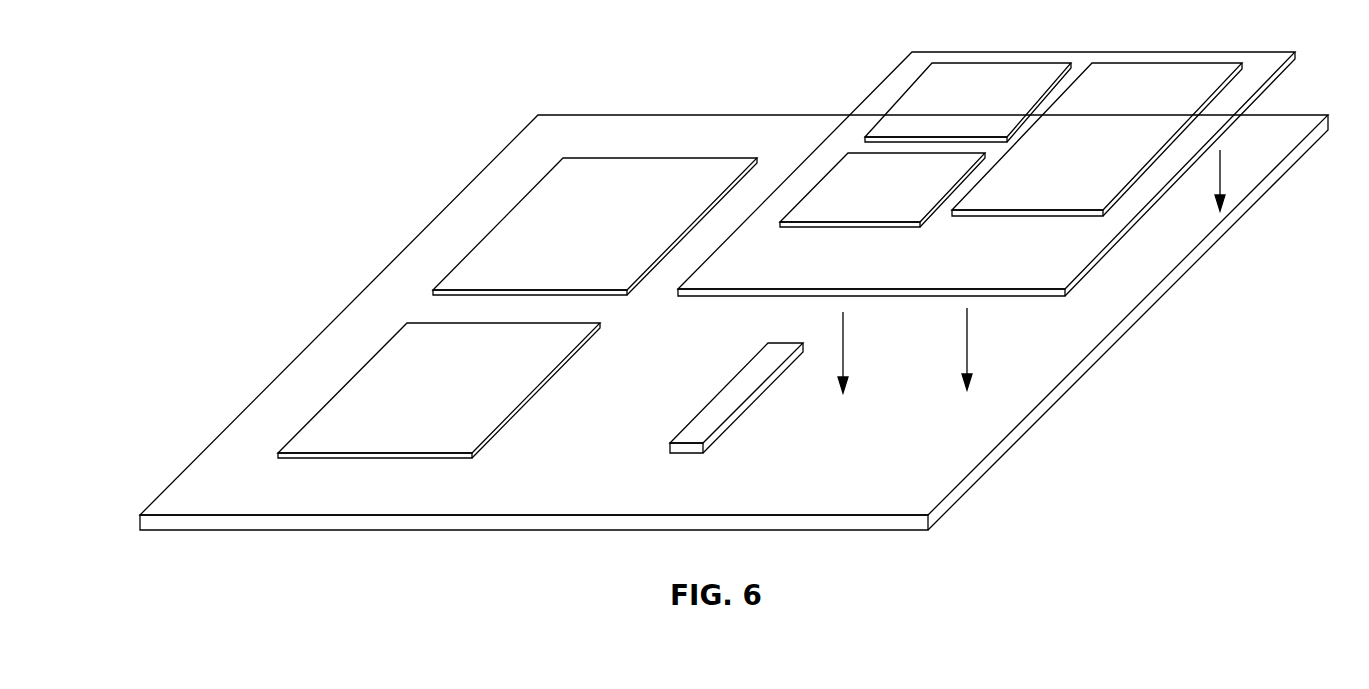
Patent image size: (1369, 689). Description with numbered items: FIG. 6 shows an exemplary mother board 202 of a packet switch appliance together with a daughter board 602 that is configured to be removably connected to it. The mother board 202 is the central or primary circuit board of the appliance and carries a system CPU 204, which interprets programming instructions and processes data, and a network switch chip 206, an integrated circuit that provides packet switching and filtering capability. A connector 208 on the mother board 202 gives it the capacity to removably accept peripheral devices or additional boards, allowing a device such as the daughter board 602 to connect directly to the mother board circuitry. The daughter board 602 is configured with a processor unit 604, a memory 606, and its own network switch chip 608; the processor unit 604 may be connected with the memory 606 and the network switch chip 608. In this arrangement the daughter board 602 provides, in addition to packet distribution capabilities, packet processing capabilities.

The mother board 202 is at (734, 322).
The system CPU 204 is at (595, 226).
The network switch chip 206 is at (439, 390).
The connector 208 is at (715, 397).
The daughter board 602 is at (986, 174).
The processor unit 604 is at (968, 102).
The memory 606 is at (1097, 139).
The network switch chip 608 is at (882, 190).